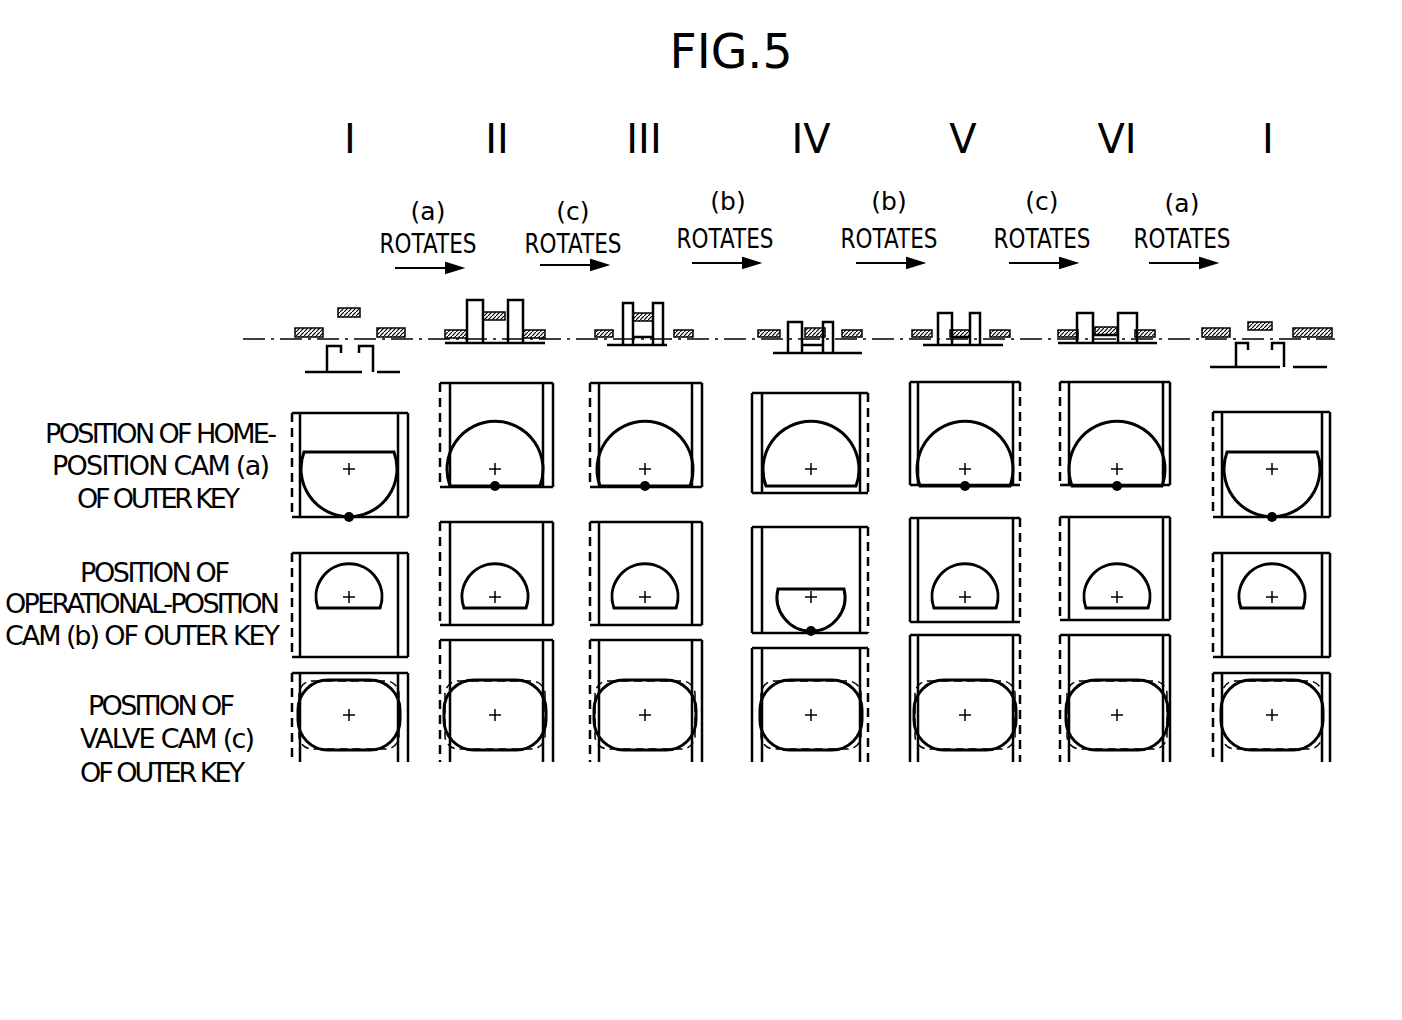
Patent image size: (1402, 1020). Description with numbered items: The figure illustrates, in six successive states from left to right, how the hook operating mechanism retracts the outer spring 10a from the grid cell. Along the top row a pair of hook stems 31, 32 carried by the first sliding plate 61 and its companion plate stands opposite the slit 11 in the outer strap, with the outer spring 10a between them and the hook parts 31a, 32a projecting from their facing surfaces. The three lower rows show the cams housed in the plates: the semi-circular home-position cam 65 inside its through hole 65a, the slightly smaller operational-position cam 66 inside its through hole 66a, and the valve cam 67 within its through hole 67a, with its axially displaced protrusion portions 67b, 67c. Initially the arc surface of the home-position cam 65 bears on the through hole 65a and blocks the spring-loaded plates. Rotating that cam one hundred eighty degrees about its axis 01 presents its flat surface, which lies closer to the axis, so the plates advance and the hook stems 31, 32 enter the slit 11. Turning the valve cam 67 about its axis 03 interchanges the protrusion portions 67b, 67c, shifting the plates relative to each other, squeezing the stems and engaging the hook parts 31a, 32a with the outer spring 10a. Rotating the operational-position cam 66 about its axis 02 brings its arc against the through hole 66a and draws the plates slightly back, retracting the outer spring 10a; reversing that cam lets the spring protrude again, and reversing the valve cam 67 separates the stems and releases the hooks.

The outer spring 10a is at (348, 308).
The slit 11 is at (320, 328).
The hook stem 31 is at (373, 358).
The hook part 31a is at (656, 318).
The hook stem 32 is at (325, 358).
The hook part 32a is at (633, 312).
The first sliding plate 61 is at (305, 372).
The home-position cam 65 is at (362, 496).
The through hole 65a is at (312, 440).
The operational-position cam 66 is at (327, 604).
The through hole 66a is at (395, 640).
The valve cam 67 is at (334, 750).
The through hole 67a is at (310, 750).
The protrusion portion 67b is at (552, 750).
The protrusion portion 67c is at (435, 722).
The axis 01 is at (352, 465).
The axis 02 is at (350, 598).
The axis 03 is at (352, 722).